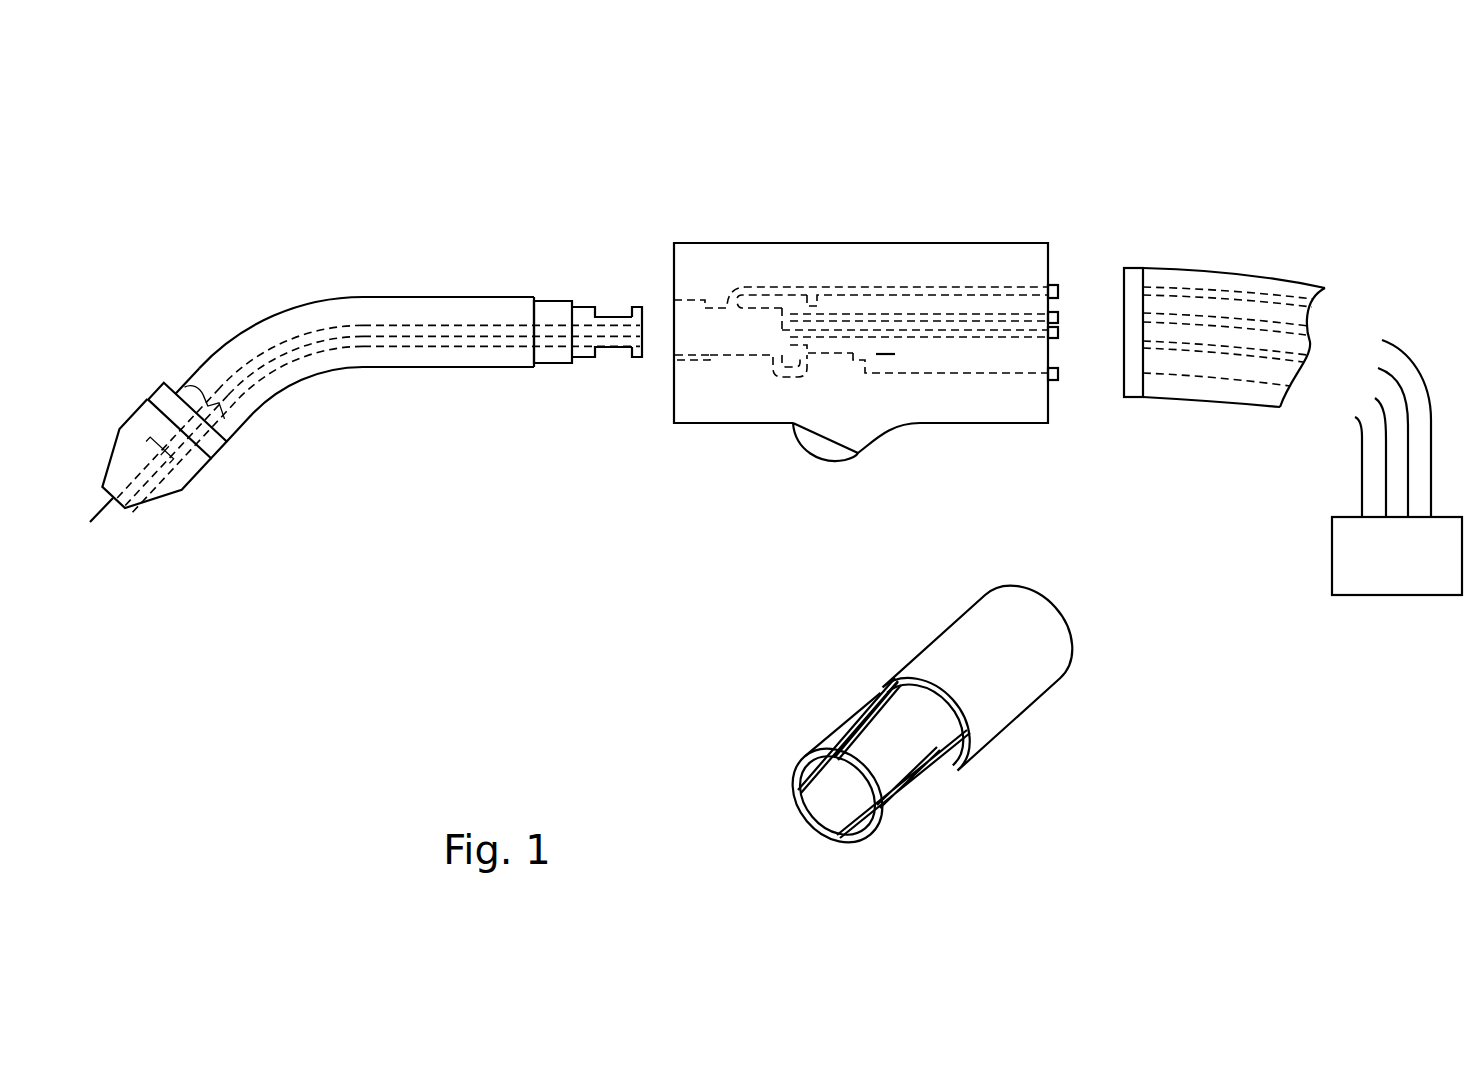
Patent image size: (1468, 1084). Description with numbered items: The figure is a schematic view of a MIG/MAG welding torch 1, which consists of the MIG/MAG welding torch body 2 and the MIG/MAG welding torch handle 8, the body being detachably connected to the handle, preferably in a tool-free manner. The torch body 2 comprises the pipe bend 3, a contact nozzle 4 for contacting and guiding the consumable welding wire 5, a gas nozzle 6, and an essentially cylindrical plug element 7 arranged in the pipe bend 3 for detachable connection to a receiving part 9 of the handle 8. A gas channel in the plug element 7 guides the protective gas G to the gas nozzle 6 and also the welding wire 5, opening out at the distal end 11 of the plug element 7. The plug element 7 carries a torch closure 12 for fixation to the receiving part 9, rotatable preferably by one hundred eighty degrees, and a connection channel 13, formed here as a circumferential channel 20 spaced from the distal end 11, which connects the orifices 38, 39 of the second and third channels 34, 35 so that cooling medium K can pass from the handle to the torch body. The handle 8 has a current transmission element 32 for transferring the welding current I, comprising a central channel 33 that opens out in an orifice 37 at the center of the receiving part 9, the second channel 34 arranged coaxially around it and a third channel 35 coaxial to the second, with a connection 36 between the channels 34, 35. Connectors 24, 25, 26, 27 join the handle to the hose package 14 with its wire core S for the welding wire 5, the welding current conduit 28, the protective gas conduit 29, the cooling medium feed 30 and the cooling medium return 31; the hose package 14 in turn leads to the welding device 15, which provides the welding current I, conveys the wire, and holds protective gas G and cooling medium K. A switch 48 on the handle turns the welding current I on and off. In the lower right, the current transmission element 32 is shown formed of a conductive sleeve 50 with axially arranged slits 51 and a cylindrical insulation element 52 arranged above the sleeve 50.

The MIG/MAG welding torch 1 is at (470, 513).
The MIG/MAG welding torch body 2 is at (245, 262).
The pipe bend 3 is at (332, 313).
The contact nozzle 4 is at (192, 385).
The consumable welding wire 5 is at (103, 510).
The gas nozzle 6 is at (153, 480).
The plug element 7 is at (572, 268).
The MIG/MAG welding torch handle 8 is at (858, 228).
The receiving part 9 is at (690, 330).
The distal end of the plug element 11 is at (632, 372).
The torch closure 12 is at (552, 297).
The connection channel 13 is at (613, 305).
The circumferential channel 20 is at (637, 332).
The hose package 14 is at (1203, 242).
The welding device 15 is at (1389, 571).
The connector 24 is at (1058, 375).
The connector 25 is at (1058, 290).
The connector 26 is at (1058, 316).
The connector 27 is at (1058, 333).
The welding current conduit 28 is at (1200, 375).
The protective gas conduit 29 is at (1225, 350).
The cooling medium feed 30 is at (1235, 290).
The cooling medium return 31 is at (1262, 323).
The current transmission element 32 is at (883, 355).
The central channel 33 is at (985, 328).
The second channel 34 is at (932, 320).
The third channel 35 is at (893, 288).
The connection 36 is at (810, 300).
The orifice 37 is at (782, 332).
The orifice 38 is at (767, 358).
The orifice 39 is at (732, 310).
The switch 48 is at (820, 445).
The sleeve 50 is at (903, 740).
The slits 51 is at (827, 837).
The insulation element 52 is at (987, 660).
The cooling medium K is at (1313, 310).
The protective gas G is at (1315, 371).
The wire core S is at (1380, 457).
The welding current I is at (360, 350).